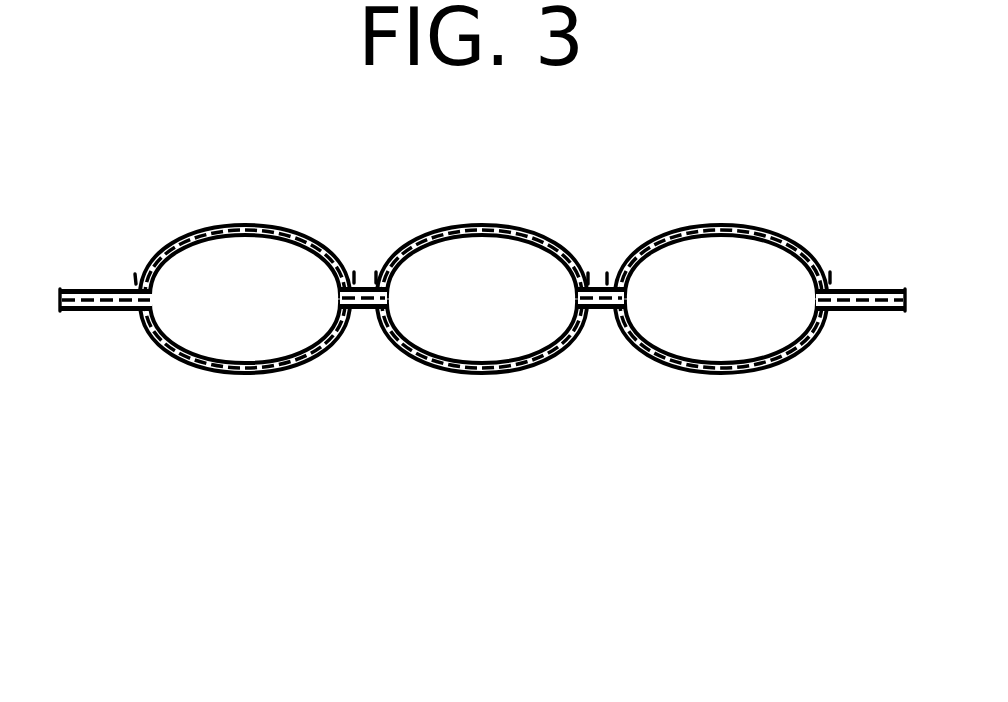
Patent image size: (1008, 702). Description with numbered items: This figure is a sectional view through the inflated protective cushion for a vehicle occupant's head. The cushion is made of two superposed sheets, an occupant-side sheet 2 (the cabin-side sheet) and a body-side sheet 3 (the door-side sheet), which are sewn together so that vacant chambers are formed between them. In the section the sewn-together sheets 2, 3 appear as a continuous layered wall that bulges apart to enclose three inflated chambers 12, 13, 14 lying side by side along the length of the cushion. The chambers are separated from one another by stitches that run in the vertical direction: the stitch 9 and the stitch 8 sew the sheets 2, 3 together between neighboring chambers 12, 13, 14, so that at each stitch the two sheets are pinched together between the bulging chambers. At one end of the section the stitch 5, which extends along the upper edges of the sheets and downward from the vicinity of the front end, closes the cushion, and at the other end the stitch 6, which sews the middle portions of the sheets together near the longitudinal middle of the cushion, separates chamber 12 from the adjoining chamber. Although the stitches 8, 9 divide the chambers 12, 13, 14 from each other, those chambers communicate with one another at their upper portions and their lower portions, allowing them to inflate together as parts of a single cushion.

The occupant-side sheet 2 is at (540, 364).
The body-side sheet 3 is at (494, 226).
The stitch 5 is at (139, 316).
The stitch 6 is at (834, 318).
The stitch 8 is at (608, 316).
The stitch 9 is at (375, 314).
The chamber 12 is at (729, 352).
The chamber 13 is at (495, 303).
The chamber 14 is at (252, 350).